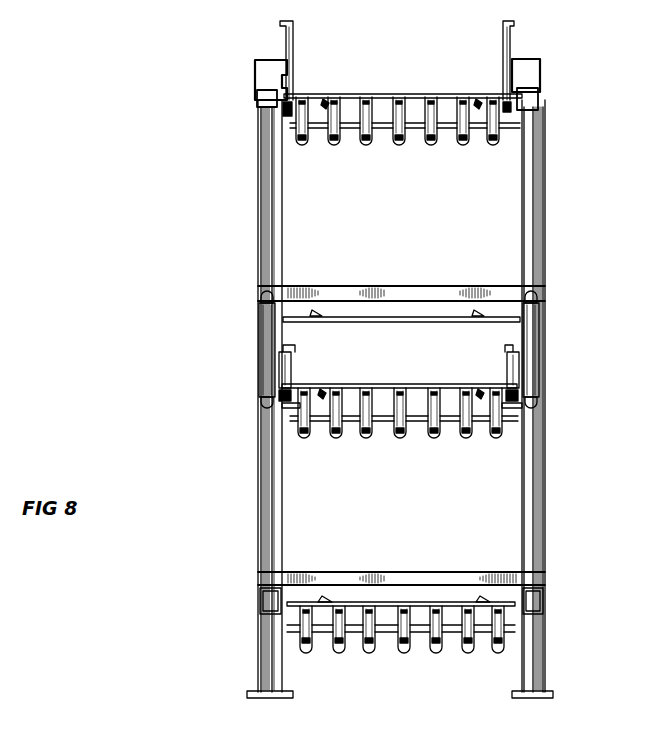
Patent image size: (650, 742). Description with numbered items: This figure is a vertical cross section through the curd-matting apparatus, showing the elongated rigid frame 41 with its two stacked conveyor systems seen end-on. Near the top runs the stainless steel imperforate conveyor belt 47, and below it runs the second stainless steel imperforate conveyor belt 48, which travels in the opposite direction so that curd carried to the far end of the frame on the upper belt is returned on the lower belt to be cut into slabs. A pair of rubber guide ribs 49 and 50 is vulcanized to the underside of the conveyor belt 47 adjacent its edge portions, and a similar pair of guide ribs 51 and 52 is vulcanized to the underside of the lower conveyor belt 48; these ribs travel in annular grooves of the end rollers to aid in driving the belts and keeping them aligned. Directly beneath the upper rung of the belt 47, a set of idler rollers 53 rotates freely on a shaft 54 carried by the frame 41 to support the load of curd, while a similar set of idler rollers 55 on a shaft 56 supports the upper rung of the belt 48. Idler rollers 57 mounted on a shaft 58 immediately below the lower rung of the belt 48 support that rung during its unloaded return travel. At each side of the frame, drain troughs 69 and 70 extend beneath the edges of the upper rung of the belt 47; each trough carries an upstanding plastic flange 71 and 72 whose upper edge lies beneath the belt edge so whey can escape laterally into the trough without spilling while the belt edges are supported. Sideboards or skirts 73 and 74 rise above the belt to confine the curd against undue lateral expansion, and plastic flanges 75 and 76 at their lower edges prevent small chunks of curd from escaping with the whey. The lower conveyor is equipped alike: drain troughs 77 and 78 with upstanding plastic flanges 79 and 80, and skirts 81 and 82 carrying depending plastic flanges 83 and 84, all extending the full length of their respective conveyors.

The frame 41 is at (546, 200).
The conveyor belt 47 is at (388, 95).
The conveyor belt 48 is at (427, 384).
The guide rib 49 is at (326, 108).
The guide rib 50 is at (478, 108).
The guide rib 51 is at (324, 394).
The guide rib 52 is at (483, 394).
The idler rollers 53 is at (356, 148).
The shaft 54 is at (394, 130).
The idler rollers 55 is at (455, 438).
The shaft 56 is at (357, 424).
The idler rollers 57 is at (368, 655).
The shaft 58 is at (424, 634).
The drain trough 69 is at (284, 118).
The drain trough 70 is at (508, 112).
The upstanding flange 71 is at (281, 97).
The upstanding flange 72 is at (540, 103).
The skirt 73 is at (295, 32).
The skirt 74 is at (503, 30).
The plastic flange 75 is at (286, 90).
The plastic flange 76 is at (527, 82).
The drain trough 77 is at (290, 408).
The drain trough 78 is at (512, 408).
The upstanding plastic flange 79 is at (266, 404).
The upstanding plastic flange 80 is at (518, 401).
The skirt 81 is at (276, 352).
The skirt 82 is at (515, 366).
The depending plastic flange 83 is at (290, 386).
The depending plastic flange 84 is at (508, 383).